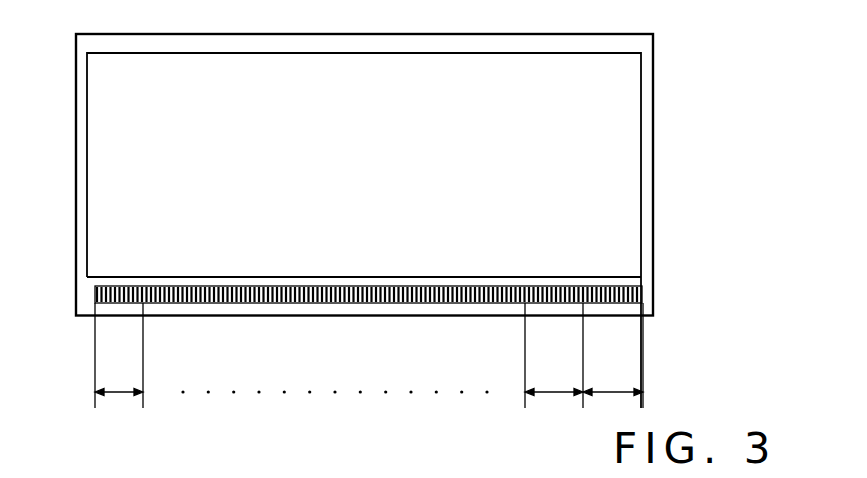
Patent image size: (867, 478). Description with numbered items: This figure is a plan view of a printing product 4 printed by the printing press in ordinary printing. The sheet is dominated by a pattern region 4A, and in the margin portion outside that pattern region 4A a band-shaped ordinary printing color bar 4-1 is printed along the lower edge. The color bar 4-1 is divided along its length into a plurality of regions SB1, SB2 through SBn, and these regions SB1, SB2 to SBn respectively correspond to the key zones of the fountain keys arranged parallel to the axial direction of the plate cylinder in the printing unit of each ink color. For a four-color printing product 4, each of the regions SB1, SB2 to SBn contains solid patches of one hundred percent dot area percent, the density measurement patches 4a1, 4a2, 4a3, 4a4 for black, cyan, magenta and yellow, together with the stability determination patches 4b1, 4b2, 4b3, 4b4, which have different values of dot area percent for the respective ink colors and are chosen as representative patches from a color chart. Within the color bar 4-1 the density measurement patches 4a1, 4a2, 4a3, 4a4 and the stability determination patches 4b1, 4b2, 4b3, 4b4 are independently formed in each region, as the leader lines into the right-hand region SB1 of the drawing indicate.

The printing product 4 is at (76, 140).
The pattern region 4A is at (641, 118).
The color bar 4-1 is at (342, 303).
The density measurement patch 4a1 is at (643, 295).
The density measurement patch 4a2 is at (632, 286).
The density measurement patch 4a3 is at (624, 286).
The density measurement patch 4a4 is at (619, 286).
The stability determination patch 4b1 is at (610, 286).
The stability determination patch 4b2 is at (601, 286).
The stability determination patch 4b3 is at (596, 286).
The stability determination patch 4b4 is at (592, 286).
The region SB1 is at (613, 355).
The region SB2 is at (554, 355).
The region SBn is at (119, 355).